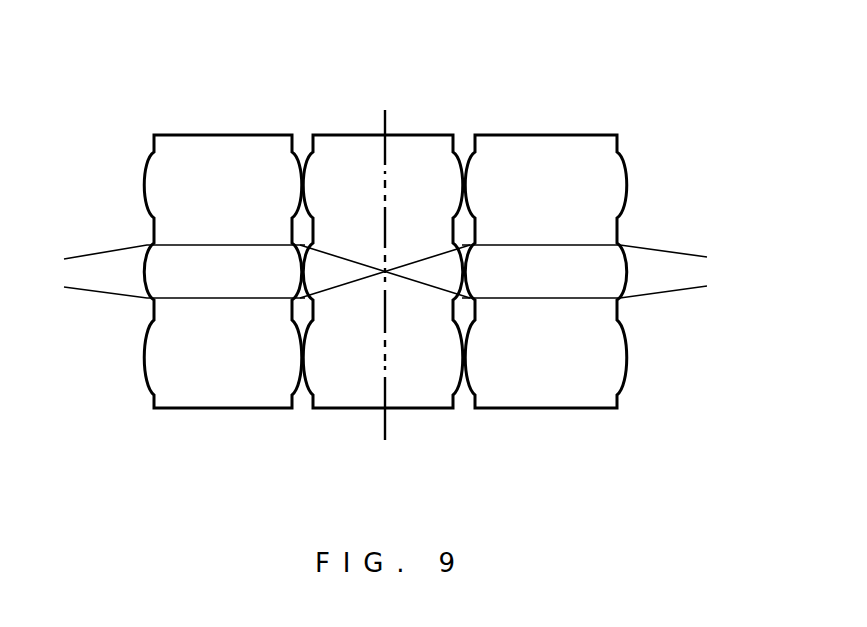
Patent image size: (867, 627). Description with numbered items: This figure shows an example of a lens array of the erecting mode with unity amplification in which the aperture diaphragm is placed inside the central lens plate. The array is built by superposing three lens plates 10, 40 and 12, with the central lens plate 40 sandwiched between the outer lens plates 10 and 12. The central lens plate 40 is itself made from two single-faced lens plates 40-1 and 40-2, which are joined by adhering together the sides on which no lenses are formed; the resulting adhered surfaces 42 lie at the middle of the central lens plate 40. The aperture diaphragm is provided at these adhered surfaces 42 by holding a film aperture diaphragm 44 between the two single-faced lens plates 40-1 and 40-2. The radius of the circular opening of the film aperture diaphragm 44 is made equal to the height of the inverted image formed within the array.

The lens plate 10 is at (234, 118).
The lens plate 12 is at (574, 120).
The central lens plate 40 is at (399, 205).
The single-faced lens plate 40-1 is at (351, 167).
The single-faced lens plate 40-2 is at (425, 167).
The adhered surfaces 42 is at (384, 358).
The film aperture diaphragm 44 is at (387, 417).